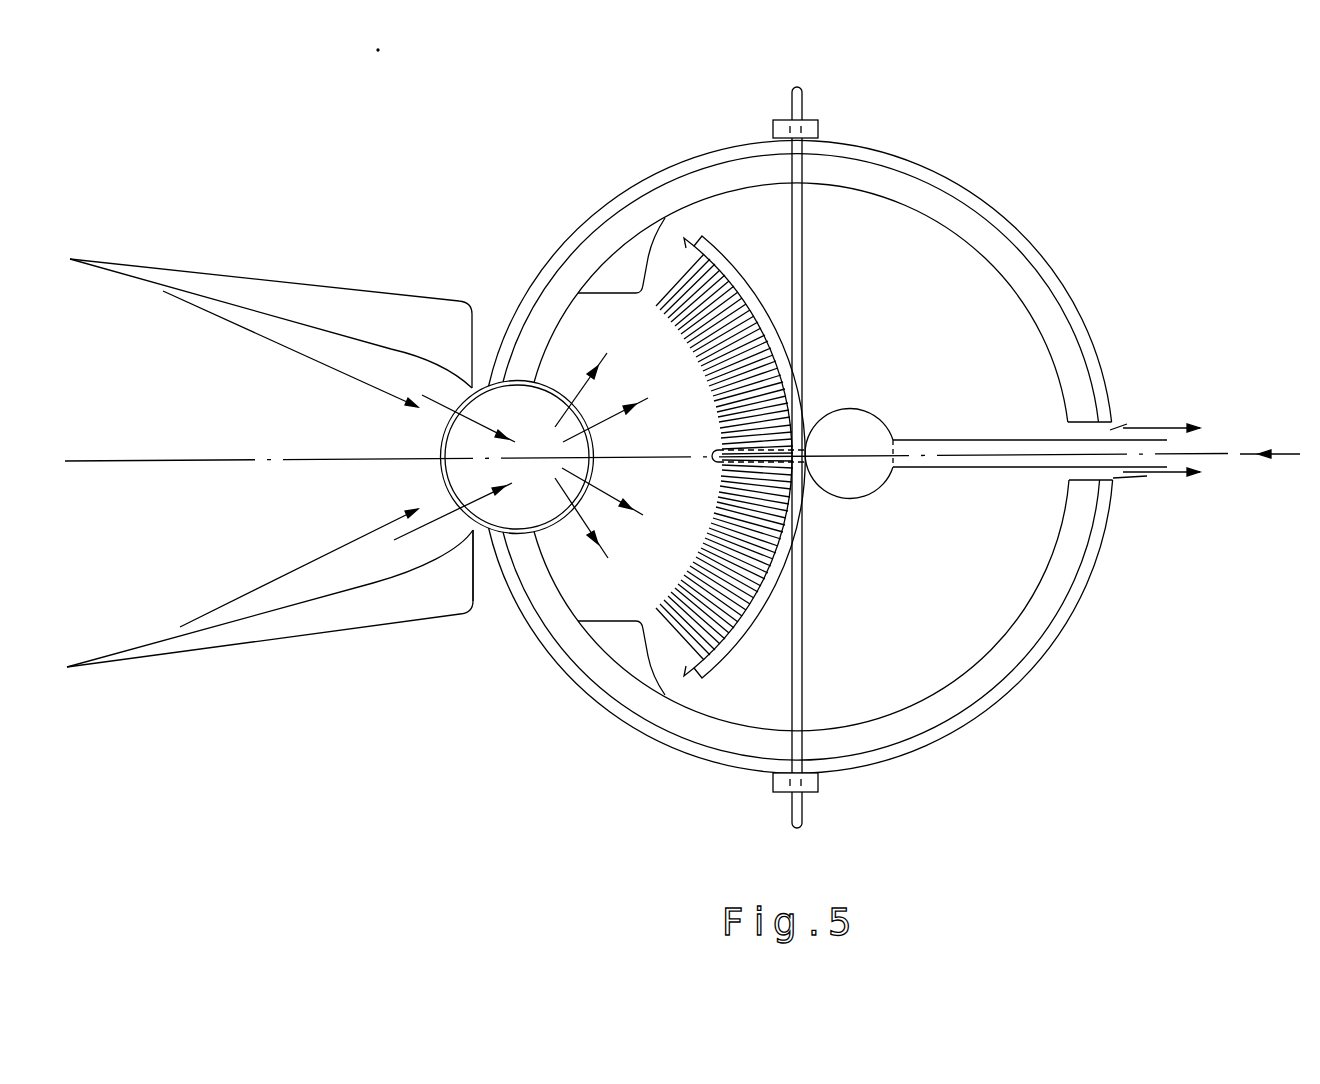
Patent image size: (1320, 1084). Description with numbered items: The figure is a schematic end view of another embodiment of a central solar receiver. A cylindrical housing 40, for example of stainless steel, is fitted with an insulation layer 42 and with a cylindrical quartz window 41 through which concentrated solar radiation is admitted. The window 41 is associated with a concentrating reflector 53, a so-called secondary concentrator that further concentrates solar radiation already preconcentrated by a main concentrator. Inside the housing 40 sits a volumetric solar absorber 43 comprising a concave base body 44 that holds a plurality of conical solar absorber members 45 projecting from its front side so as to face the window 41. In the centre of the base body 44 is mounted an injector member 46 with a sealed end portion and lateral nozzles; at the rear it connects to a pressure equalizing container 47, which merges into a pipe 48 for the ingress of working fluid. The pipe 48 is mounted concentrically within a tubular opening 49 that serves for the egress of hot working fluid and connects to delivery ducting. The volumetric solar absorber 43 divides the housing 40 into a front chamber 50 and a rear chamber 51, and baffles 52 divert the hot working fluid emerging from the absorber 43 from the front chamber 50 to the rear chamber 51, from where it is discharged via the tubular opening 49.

The cylindrical housing 40 is at (938, 168).
The cylindrical quartz window 41 is at (491, 585).
The insulation layer 42 is at (965, 680).
The volumetric solar absorber 43 is at (788, 386).
The concave base body 44 is at (723, 267).
The conical solar absorber members 45 is at (712, 393).
The injector member 46 is at (717, 458).
The pressure equalizing container 47 is at (872, 473).
The pipe 48 is at (997, 458).
The tubular opening 49 is at (1133, 420).
The front chamber 50 is at (583, 587).
The rear chamber 51 is at (1010, 578).
The baffles 52 is at (618, 277).
The concentrating reflector 53 is at (385, 612).